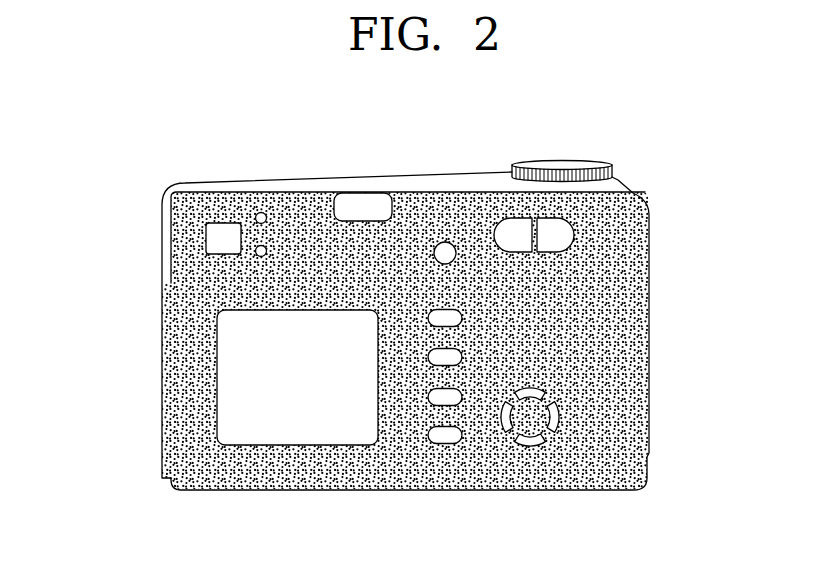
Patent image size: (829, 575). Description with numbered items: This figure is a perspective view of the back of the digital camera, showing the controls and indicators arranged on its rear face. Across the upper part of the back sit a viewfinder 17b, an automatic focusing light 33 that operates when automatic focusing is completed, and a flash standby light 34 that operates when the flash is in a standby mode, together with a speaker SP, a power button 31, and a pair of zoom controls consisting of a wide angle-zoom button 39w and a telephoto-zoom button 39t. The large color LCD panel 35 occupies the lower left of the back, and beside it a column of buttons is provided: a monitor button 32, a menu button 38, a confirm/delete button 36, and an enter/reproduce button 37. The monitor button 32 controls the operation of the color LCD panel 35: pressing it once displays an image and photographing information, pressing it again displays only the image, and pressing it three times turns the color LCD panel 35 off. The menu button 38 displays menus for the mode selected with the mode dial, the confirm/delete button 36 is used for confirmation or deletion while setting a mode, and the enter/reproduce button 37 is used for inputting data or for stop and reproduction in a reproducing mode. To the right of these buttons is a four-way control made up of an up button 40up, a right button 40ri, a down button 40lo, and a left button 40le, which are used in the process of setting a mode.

The viewfinder 17b is at (222, 232).
The automatic focusing light 33 is at (262, 212).
The flash standby light 34 is at (257, 254).
The speaker SP is at (362, 205).
The power button 31 is at (445, 242).
The wide angle-zoom button 39w is at (508, 232).
The telephoto-zoom button 39t is at (557, 232).
The monitor button 32 is at (453, 318).
The menu button 38 is at (473, 357).
The confirm/delete button 36 is at (430, 404).
The enter/reproduce button 37 is at (445, 443).
The color LCD panel 35 is at (298, 428).
The up button 40up is at (545, 388).
The right button 40ri is at (560, 413).
The down button 40lo is at (532, 447).
The left button 40le is at (503, 425).